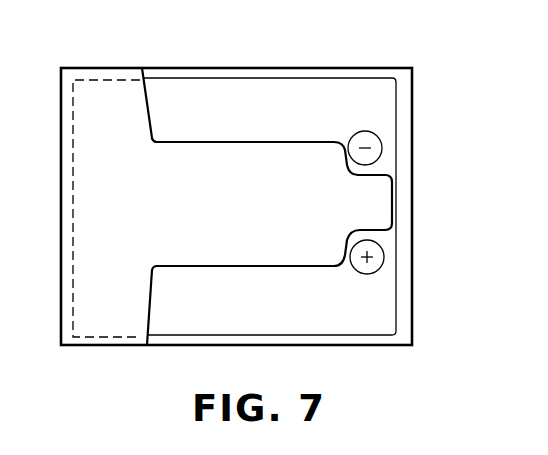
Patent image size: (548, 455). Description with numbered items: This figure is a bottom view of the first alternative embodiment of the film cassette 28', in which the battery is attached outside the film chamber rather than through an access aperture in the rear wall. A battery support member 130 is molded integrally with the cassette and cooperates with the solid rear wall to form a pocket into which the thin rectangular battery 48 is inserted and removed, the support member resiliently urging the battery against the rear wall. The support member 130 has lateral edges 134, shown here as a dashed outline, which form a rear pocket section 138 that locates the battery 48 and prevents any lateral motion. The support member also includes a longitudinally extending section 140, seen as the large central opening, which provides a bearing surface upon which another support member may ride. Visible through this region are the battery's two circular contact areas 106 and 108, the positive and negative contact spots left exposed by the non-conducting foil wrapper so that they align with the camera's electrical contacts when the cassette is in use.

The cassette 28' is at (276, 219).
The battery 48 is at (380, 104).
The lateral edges 134 is at (122, 82).
The longitudinally extending section 140 is at (258, 202).
The battery support member 130 is at (240, 258).
The rear pocket section 138 is at (165, 137).
The circular contact area 108 is at (374, 160).
The circular contact area 106 is at (380, 248).